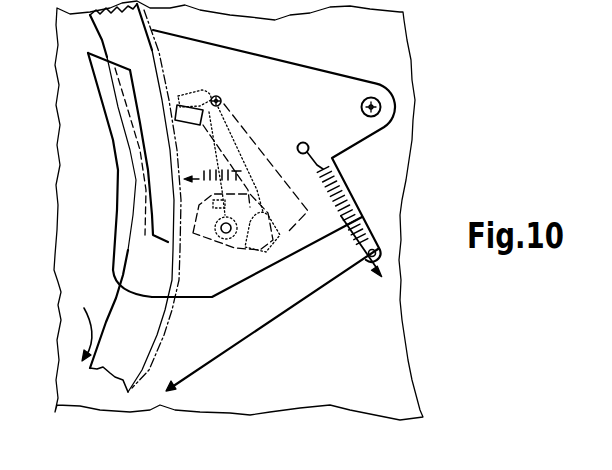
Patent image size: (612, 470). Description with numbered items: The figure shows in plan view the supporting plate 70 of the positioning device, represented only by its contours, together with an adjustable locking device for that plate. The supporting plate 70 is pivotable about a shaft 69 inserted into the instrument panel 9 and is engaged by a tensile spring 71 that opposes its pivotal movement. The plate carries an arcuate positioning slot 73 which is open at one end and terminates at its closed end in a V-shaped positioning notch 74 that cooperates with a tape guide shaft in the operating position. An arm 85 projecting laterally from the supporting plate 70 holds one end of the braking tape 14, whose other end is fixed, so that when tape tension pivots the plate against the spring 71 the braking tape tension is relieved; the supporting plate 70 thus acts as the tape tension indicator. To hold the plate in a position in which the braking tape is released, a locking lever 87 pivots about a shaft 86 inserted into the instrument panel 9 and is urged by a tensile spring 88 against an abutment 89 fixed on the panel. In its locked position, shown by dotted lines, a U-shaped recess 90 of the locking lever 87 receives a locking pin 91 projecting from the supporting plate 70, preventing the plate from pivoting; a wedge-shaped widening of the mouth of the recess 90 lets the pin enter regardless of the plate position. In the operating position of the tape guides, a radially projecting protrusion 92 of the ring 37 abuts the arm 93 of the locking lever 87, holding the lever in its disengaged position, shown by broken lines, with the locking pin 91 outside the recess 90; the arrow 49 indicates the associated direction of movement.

The instrument panel 9 is at (412, 388).
The braking tape 14 is at (246, 340).
The ring 37 is at (137, 358).
The direction of movement arrow 49 is at (82, 322).
The shaft 69 is at (373, 97).
The supporting plate 70 is at (302, 73).
The tensile spring 71 is at (339, 190).
The arcuate positioning slot 73 is at (143, 92).
The V-shaped positioning notch 74 is at (158, 233).
The arm 85 is at (372, 249).
The shaft 86 is at (222, 100).
The locking lever 87 is at (265, 158).
The tensile spring 88 is at (208, 173).
The abutment 89 is at (229, 222).
The U-shaped recess 90 is at (277, 228).
The locking pin 91 is at (225, 234).
The protrusion 92 is at (181, 88).
The arm 93 is at (191, 97).